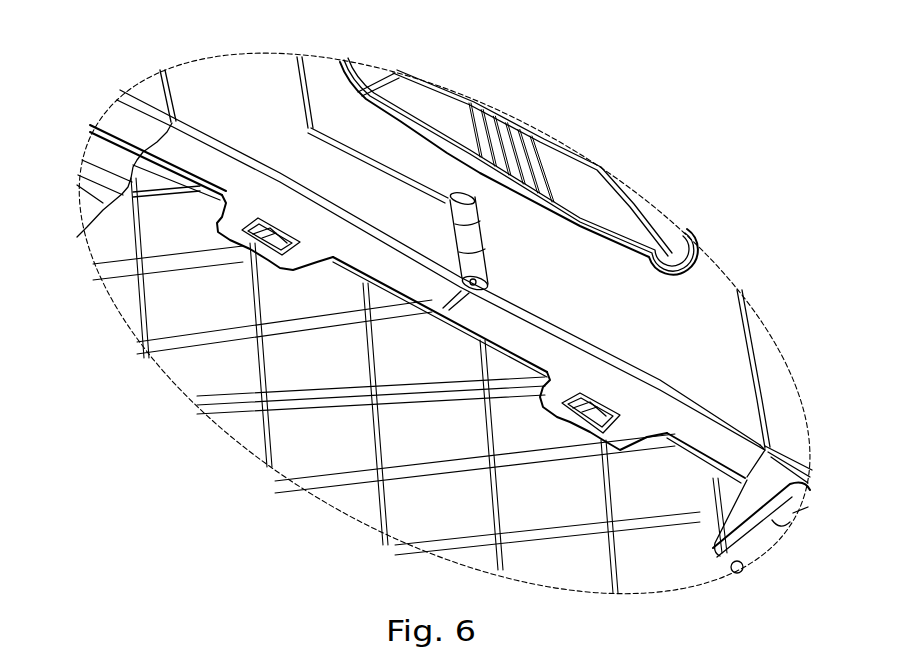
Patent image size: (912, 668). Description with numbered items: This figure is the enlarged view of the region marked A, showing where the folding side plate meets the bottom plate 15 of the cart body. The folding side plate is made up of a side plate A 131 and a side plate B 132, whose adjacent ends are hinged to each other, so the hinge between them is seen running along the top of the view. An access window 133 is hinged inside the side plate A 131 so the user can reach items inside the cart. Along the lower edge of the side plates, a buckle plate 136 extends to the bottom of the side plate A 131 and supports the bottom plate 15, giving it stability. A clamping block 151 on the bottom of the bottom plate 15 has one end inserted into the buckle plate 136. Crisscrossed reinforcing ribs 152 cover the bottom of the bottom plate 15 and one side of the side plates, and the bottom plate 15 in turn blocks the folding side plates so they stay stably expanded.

The enlarged detail region A is at (796, 377).
The bottom plate 15 is at (323, 353).
The side plate A 131 is at (642, 319).
The side plate B 132 is at (246, 123).
The access window 133 is at (458, 121).
The buckle plate 136 is at (227, 220).
The clamping block 151 is at (587, 420).
The reinforcing rib 152 is at (333, 410).